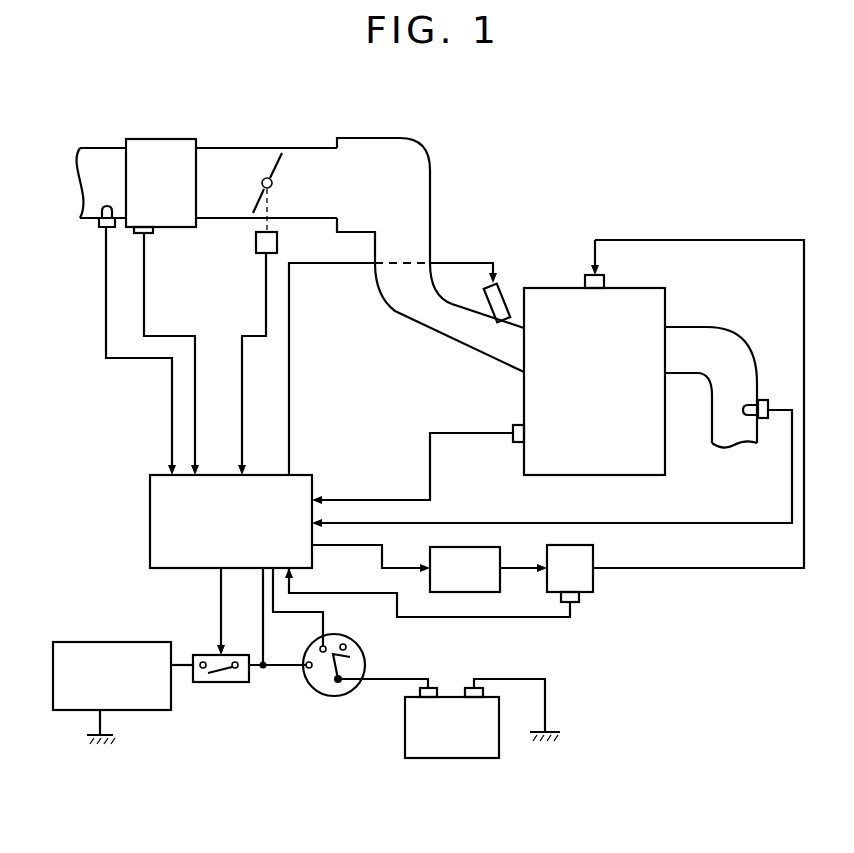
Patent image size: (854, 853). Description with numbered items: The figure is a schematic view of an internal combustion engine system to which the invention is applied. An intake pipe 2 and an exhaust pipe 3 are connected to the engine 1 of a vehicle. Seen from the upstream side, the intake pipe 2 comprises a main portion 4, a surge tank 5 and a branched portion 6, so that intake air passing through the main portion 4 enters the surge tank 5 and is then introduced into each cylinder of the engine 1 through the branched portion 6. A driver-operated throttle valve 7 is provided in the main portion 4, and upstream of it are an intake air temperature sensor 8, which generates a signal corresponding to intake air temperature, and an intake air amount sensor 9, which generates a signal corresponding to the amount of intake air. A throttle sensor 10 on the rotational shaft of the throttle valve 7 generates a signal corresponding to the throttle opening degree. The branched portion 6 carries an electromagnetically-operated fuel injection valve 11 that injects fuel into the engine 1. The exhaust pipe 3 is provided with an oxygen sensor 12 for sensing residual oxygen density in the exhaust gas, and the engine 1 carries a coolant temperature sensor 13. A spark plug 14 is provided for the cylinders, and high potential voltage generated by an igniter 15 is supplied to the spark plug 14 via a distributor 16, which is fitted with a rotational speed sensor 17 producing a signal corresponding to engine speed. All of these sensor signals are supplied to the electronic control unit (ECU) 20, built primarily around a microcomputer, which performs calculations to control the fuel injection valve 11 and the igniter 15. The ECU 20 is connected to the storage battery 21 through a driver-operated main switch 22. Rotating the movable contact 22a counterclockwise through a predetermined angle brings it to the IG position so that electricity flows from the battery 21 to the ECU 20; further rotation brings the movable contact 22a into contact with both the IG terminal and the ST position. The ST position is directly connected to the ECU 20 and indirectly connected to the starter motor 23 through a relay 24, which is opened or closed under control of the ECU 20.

The engine 1 is at (554, 288).
The intake pipe 2 is at (431, 203).
The exhaust pipe 3 is at (726, 331).
The main portion 4 is at (213, 146).
The surge tank 5 is at (388, 137).
The branched portion 6 is at (393, 312).
The throttle valve 7 is at (273, 150).
The intake air temperature sensor 8 is at (100, 222).
The intake air amount sensor 9 is at (185, 232).
The throttle sensor 10 is at (278, 242).
The fuel injection valve 11 is at (497, 282).
The oxygen sensor 12 is at (768, 400).
The coolant temperature sensor 13 is at (514, 425).
The spark plug 14 is at (604, 280).
The igniter 15 is at (500, 547).
The distributor 16 is at (593, 549).
The rotational speed sensor 17 is at (580, 598).
The electronic control unit (ECU) 20 is at (150, 503).
The storage battery 21 is at (462, 760).
The main switch 22 is at (340, 697).
The movable contact 22a is at (340, 668).
The starter motor 23 is at (153, 712).
The relay 24 is at (228, 683).